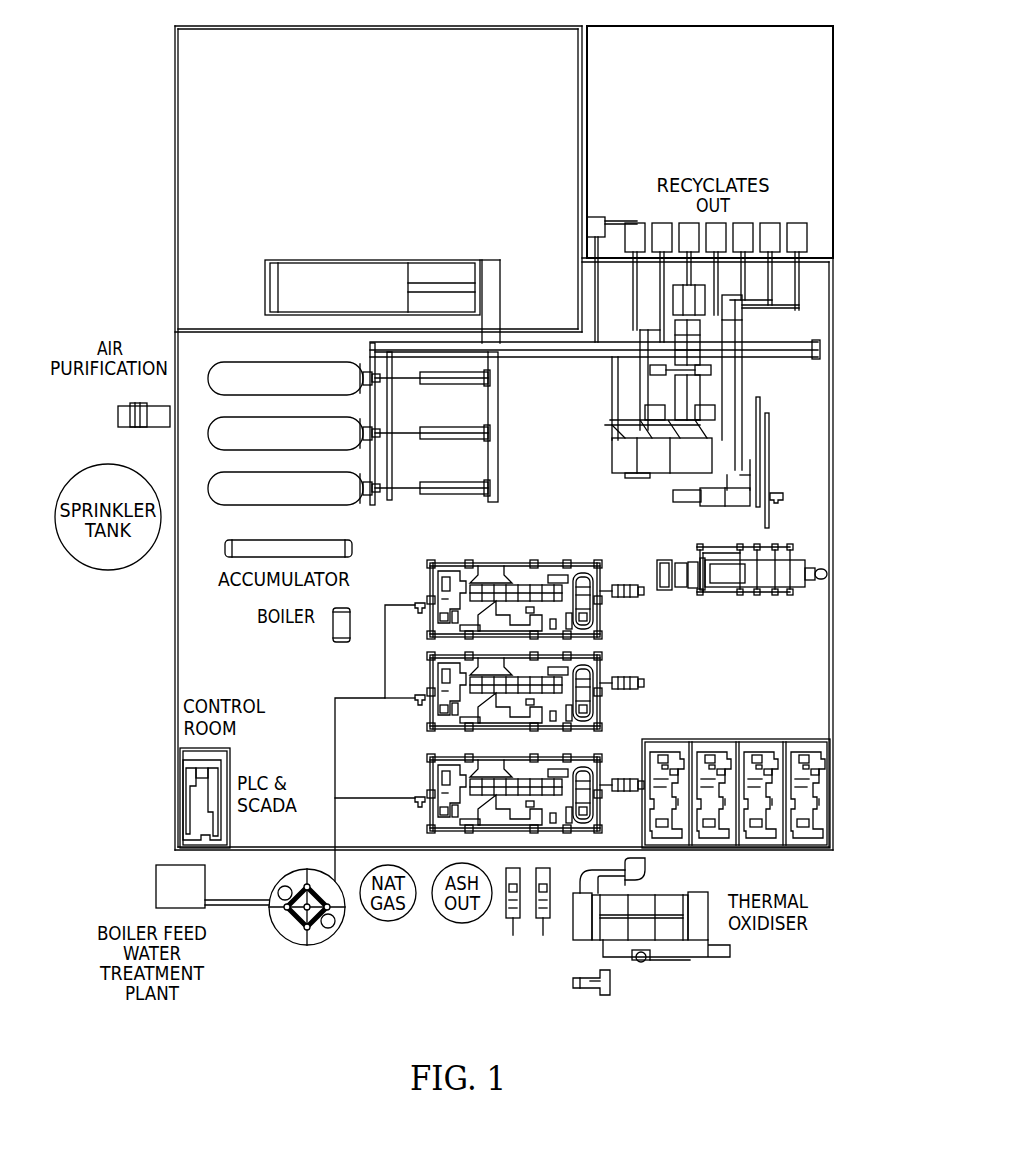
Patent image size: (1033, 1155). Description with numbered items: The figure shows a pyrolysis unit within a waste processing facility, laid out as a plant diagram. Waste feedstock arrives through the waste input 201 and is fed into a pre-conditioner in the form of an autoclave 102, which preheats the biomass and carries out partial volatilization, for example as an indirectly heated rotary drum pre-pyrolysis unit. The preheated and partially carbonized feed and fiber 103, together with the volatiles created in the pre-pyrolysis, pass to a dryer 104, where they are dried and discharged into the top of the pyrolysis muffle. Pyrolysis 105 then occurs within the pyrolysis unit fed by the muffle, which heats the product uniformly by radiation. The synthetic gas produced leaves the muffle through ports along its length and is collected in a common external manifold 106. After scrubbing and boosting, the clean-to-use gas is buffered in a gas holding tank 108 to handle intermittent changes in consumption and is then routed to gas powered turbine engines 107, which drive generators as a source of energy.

The waste input / waste accumulating connector 201 is at (382, 203).
The autoclave 102 is at (353, 438).
The preheated and partially carbonized feed and fiber 103 is at (595, 390).
The dryer 104 is at (742, 587).
The pyrolysis 105 is at (520, 673).
The common external manifold 106 is at (375, 743).
The gas powered turbine engines 107 is at (736, 770).
The gas holding tank 108 is at (303, 933).